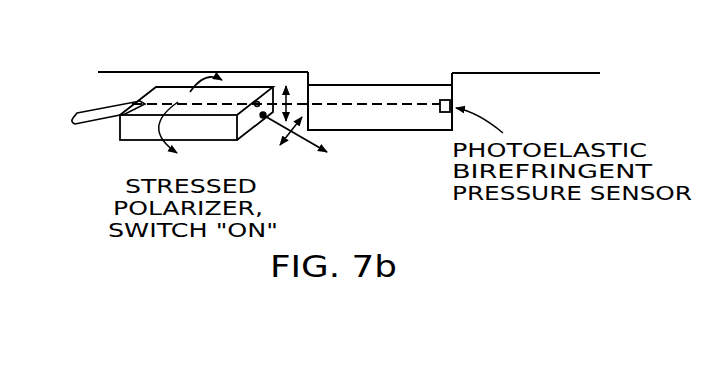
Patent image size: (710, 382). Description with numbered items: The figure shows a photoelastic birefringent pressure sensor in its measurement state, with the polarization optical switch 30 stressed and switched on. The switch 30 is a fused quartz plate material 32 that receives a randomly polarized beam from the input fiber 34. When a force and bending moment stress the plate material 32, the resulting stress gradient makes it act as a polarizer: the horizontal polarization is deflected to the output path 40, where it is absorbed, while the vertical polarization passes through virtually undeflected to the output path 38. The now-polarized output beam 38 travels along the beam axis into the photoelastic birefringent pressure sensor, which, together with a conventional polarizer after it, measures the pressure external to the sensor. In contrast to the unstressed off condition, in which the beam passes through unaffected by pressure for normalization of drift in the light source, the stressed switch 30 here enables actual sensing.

The optical switch 30 is at (166, 63).
The fused quartz plate material 32 is at (240, 97).
The input fiber 34 is at (83, 113).
The output path 38 is at (283, 88).
The output path 40 is at (306, 143).